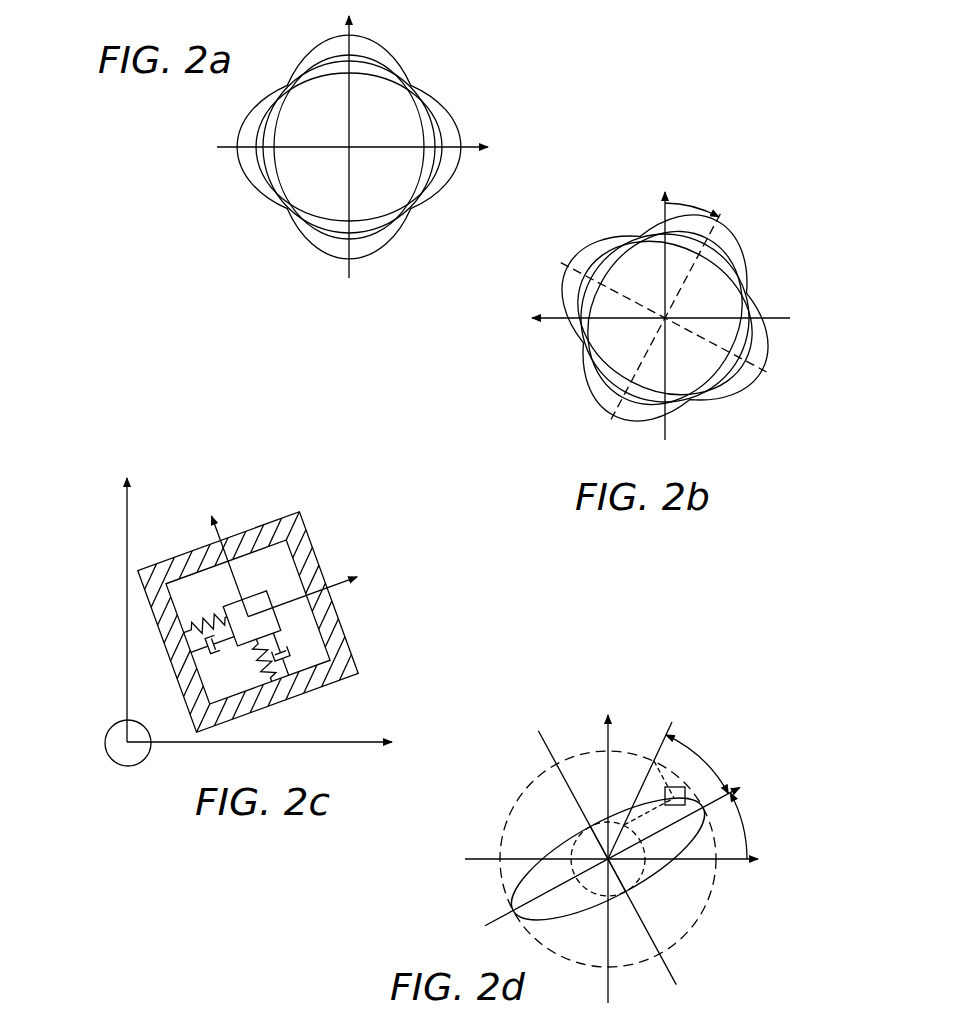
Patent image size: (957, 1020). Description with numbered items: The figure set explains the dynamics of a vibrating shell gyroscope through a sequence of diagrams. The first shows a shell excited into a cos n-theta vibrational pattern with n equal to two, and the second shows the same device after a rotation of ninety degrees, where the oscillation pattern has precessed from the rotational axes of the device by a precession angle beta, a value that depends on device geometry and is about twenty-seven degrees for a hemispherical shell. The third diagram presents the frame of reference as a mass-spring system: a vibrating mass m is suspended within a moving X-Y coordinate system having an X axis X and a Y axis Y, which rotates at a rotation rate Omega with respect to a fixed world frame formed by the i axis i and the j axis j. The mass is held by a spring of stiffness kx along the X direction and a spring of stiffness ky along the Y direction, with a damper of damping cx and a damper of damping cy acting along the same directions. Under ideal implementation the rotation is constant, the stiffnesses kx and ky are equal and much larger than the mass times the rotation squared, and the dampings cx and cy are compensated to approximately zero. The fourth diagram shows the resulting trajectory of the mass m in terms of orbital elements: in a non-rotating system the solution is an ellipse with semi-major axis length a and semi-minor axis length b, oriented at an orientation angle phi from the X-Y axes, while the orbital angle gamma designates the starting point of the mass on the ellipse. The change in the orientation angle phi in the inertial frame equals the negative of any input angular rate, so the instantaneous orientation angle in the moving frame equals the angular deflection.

In FIG. 2B, the precession angle beta is at (692, 198).
In FIG. 2C, the j axis of fixed world frame j is at (125, 596).
In FIG. 2C, the i axis of fixed world frame i is at (266, 742).
In FIG. 2C, the rotation rate Omega is at (116, 731).
In FIG. 2C, the X axis of moving coordinate system X is at (311, 593).
In FIG. 2D, the X axis of moving coordinate system X is at (621, 862).
In FIG. 2C, the Y axis of moving coordinate system Y is at (222, 552).
In FIG. 2D, the Y axis of moving coordinate system Y is at (606, 842).
In FIG. 2C, the stiffness along X kx is at (205, 617).
In FIG. 2C, the damping along X cx is at (212, 652).
In FIG. 2C, the stiffness along Y ky is at (250, 667).
In FIG. 2C, the damping along Y cy is at (286, 654).
In FIG. 2C, the vibrating mass m is at (252, 618).
In FIG. 2D, the vibrating mass m is at (654, 793).
In FIG. 2D, the semi-major axis length a is at (612, 856).
In FIG. 2D, the semi-minor axis length b is at (604, 858).
In FIG. 2D, the orbital angle gamma is at (668, 790).
In FIG. 2D, the orientation angle phi is at (734, 826).